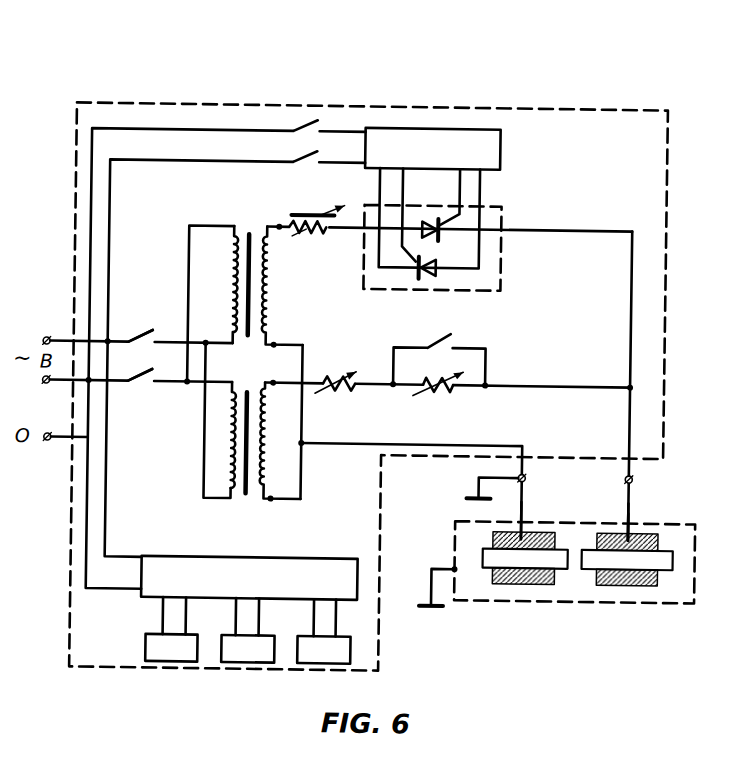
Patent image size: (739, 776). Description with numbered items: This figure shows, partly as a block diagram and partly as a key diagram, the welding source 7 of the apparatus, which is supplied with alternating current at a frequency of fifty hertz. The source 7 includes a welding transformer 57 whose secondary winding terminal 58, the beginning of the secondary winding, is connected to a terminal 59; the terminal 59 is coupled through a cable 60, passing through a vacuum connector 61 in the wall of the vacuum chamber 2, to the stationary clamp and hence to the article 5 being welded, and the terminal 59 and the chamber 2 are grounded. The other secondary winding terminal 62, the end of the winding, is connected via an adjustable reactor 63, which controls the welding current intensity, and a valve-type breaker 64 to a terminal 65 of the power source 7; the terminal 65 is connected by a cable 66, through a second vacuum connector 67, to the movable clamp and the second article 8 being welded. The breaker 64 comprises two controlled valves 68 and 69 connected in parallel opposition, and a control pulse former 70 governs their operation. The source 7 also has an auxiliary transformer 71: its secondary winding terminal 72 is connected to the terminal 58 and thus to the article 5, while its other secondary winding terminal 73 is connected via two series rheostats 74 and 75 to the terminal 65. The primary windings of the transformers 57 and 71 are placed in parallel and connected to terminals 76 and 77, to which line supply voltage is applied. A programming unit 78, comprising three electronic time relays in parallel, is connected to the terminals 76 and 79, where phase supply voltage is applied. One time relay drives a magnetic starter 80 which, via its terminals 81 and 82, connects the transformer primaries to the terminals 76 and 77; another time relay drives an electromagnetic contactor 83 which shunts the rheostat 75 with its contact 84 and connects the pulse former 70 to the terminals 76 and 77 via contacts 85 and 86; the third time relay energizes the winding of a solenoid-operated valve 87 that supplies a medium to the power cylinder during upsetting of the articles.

The vacuum chamber 2 is at (648, 605).
The article being welded 5 is at (545, 560).
The welding source 7 is at (671, 207).
The second electrode 8 is at (650, 562).
The welding transformer 57 is at (248, 234).
The secondary winding terminal 58 is at (275, 344).
The terminal 59 is at (528, 477).
The cable 60 is at (519, 481).
The vacuum connector 61 is at (532, 526).
The secondary winding terminal 62 is at (278, 231).
The adjustable reactor 63 is at (312, 214).
The valve-type breaker 64 is at (505, 217).
The terminal 65 is at (634, 477).
The cable 66 is at (628, 508).
The vacuum connector 67 is at (635, 527).
The controlled valve 68 is at (428, 220).
The controlled valve 69 is at (424, 278).
The control pulse former 70 is at (433, 149).
The auxiliary transformer 71 is at (245, 500).
The secondary winding terminal 72 is at (272, 501).
The secondary winding terminal 73 is at (270, 388).
The rheostat 74 is at (347, 390).
The rheostat 75 is at (450, 390).
The terminal 76 is at (44, 341).
The terminal 77 is at (43, 383).
The programming unit 78 is at (249, 578).
The terminal 79 is at (50, 444).
The magnetic starter 80 is at (171, 629).
The terminal of magnetic starter 81 is at (128, 333).
The terminal of magnetic starter 82 is at (140, 371).
The electromagnetic contactor 83 is at (248, 630).
The contact 84 is at (440, 335).
The contact 85 is at (290, 131).
The contact 86 is at (290, 163).
The solenoid-operated valve 87 is at (324, 631).